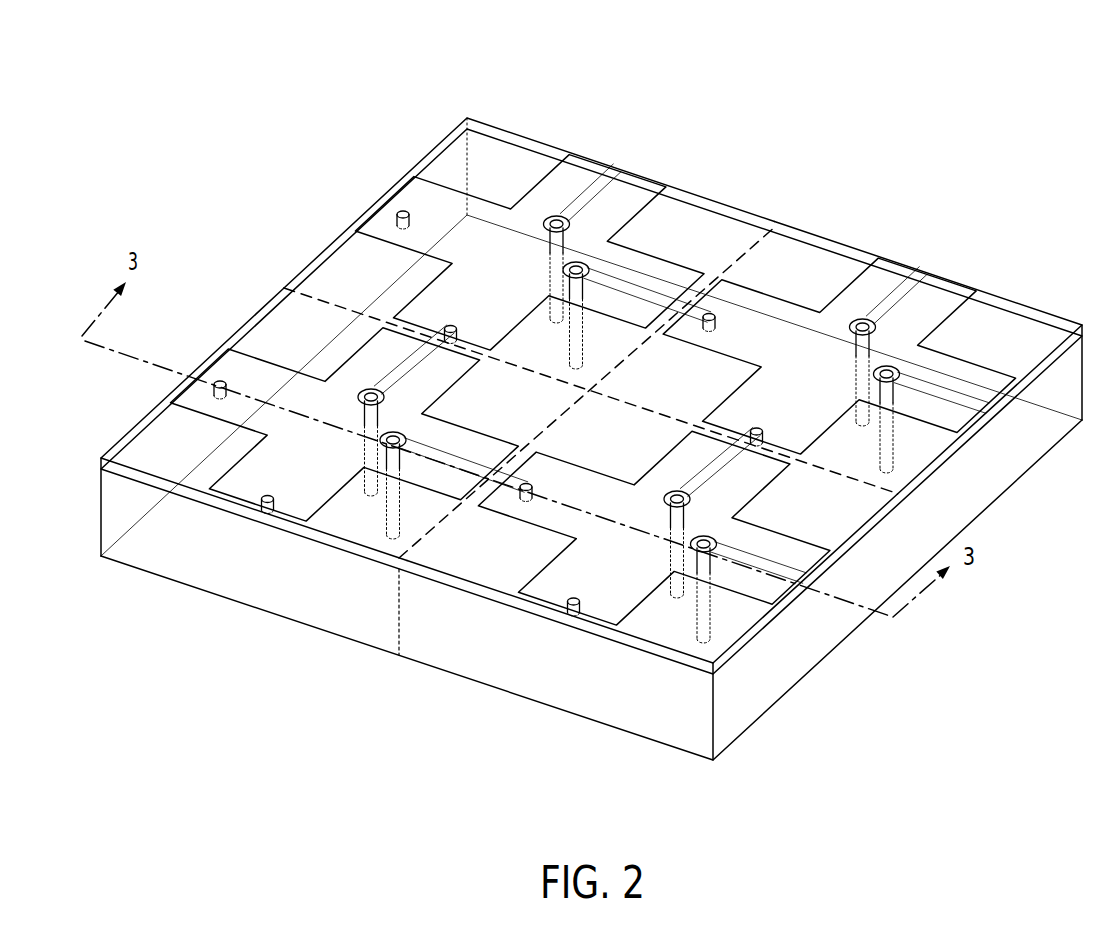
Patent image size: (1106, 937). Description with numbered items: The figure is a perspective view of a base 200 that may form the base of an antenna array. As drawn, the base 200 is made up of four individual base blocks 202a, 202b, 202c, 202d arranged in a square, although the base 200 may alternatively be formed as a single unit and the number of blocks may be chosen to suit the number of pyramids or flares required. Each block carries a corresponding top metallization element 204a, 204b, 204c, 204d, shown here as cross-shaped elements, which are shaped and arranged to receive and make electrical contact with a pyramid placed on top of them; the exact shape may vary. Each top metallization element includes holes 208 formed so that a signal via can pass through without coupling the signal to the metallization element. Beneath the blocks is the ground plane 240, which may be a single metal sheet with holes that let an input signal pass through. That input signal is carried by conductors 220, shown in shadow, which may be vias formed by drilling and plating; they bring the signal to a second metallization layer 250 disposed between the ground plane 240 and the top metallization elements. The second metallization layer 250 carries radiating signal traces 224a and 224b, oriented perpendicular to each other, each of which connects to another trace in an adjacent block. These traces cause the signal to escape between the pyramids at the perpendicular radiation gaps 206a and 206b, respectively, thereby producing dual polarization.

The base 200 is at (232, 106).
The base block 202a is at (118, 454).
The base block 202b is at (712, 648).
The base block 202c is at (462, 140).
The base block 202d is at (790, 240).
The top metallization element 204a is at (263, 373).
The top metallization element 204b is at (557, 582).
The top metallization element 204c is at (447, 200).
The top metallization element 204d is at (863, 288).
The radiation gap 206a is at (516, 470).
The radiation gap 206b is at (440, 326).
The hole 208 is at (551, 216).
The conductor 220 is at (364, 398).
The signal trace 224a is at (457, 478).
The signal trace 224b is at (403, 377).
The ground plane 240 is at (112, 568).
The second metallization layer 250 is at (648, 653).